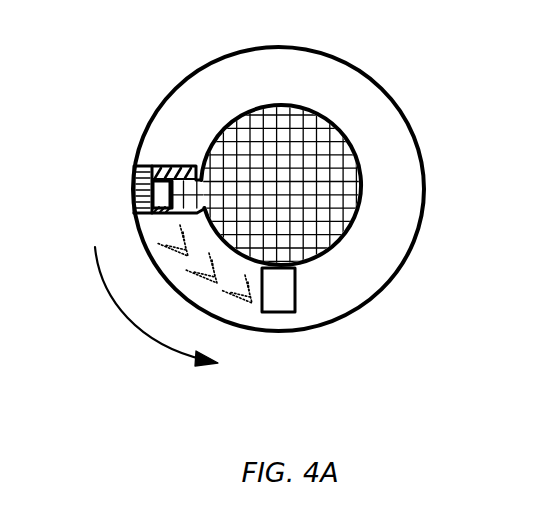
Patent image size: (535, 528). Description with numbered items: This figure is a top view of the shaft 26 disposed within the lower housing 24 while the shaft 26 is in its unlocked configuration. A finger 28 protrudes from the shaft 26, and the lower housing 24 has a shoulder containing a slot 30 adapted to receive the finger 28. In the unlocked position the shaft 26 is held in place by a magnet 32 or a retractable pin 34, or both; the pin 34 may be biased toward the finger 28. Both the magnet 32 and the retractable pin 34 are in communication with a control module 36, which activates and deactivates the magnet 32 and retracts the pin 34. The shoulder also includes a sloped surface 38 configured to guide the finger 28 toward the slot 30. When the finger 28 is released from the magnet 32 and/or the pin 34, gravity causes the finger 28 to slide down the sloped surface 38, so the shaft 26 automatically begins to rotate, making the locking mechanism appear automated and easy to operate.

The lower housing 24 is at (380, 80).
The shaft 26 is at (362, 168).
The finger 28 is at (119, 139).
The slot 30 is at (297, 293).
The magnet 32 is at (185, 168).
The retractable pin 34 is at (153, 218).
The control module 36 is at (133, 190).
The sloped surface 38 is at (223, 290).